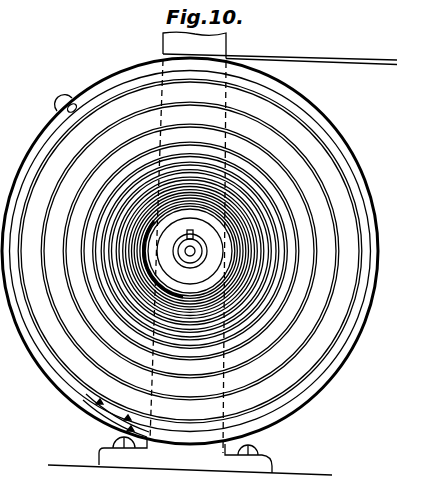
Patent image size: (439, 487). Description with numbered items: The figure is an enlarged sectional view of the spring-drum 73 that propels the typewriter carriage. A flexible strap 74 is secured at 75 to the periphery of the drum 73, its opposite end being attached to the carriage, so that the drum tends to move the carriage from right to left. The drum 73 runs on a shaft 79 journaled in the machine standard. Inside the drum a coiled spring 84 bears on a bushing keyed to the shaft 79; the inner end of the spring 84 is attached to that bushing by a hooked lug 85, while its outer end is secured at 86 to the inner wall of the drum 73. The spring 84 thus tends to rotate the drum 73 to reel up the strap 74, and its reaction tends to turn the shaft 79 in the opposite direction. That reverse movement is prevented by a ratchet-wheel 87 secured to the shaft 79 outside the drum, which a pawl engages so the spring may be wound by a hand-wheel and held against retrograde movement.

The spring-drum 73 is at (373, 290).
The flexible strap 74 is at (352, 62).
The strap securement point 75 is at (58, 93).
The shaft 79 is at (192, 254).
The spring 84 is at (328, 312).
The hooked lug 85 is at (153, 222).
The outer spring securement 86 is at (97, 402).
The ratchet-wheel 87 is at (183, 287).